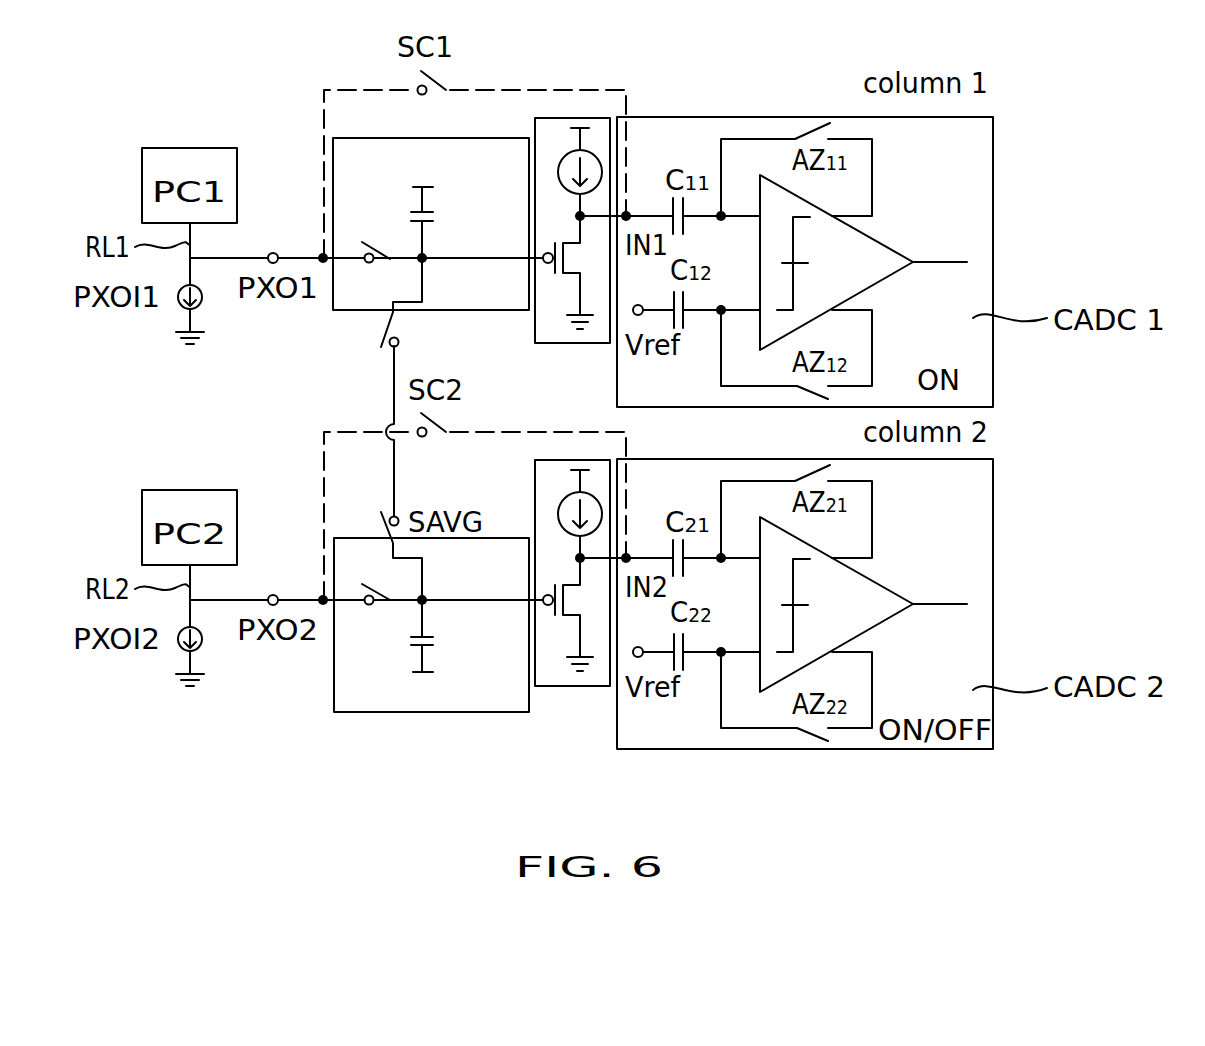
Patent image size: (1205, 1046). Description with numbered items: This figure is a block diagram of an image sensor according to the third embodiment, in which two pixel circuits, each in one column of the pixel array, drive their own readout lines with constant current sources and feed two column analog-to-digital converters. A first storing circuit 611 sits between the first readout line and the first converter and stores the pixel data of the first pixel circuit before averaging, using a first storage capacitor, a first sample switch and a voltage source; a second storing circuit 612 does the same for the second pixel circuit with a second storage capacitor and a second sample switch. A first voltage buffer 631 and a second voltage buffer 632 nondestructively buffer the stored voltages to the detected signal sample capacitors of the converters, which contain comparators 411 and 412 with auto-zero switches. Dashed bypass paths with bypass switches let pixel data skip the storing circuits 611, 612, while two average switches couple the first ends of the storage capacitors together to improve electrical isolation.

The first storing circuit 611 is at (487, 138).
The second storing circuit 612 is at (468, 712).
The first voltage buffer 631 is at (553, 118).
The second voltage buffer 632 is at (567, 686).
The comparator (column 1) 411 is at (887, 245).
The comparator (column 2) 412 is at (883, 587).